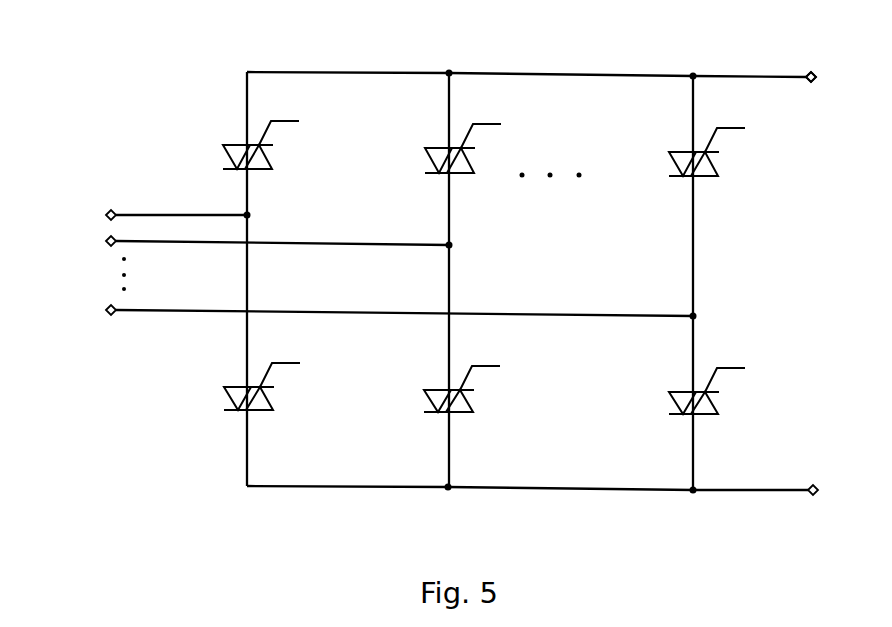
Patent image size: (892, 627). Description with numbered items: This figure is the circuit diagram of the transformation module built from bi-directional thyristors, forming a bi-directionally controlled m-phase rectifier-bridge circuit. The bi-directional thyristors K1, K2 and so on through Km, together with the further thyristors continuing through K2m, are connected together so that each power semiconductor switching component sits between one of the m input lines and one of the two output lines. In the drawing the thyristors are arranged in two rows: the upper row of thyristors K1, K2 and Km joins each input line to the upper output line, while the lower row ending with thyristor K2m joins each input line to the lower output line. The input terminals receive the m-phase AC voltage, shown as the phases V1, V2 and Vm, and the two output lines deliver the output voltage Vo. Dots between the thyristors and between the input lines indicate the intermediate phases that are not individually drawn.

The bi-directional thyristor K1 is at (212, 165).
The bi-directional thyristor K2 is at (410, 168).
The bi-directional thyristor Km is at (655, 170).
The bi-directional thyristor K2m is at (657, 412).
The m-phase AC voltage V1 is at (155, 213).
The m-phase AC voltage V2 is at (256, 246).
The m-phase AC voltage Vm is at (378, 308).
The output voltage Vo is at (813, 99).